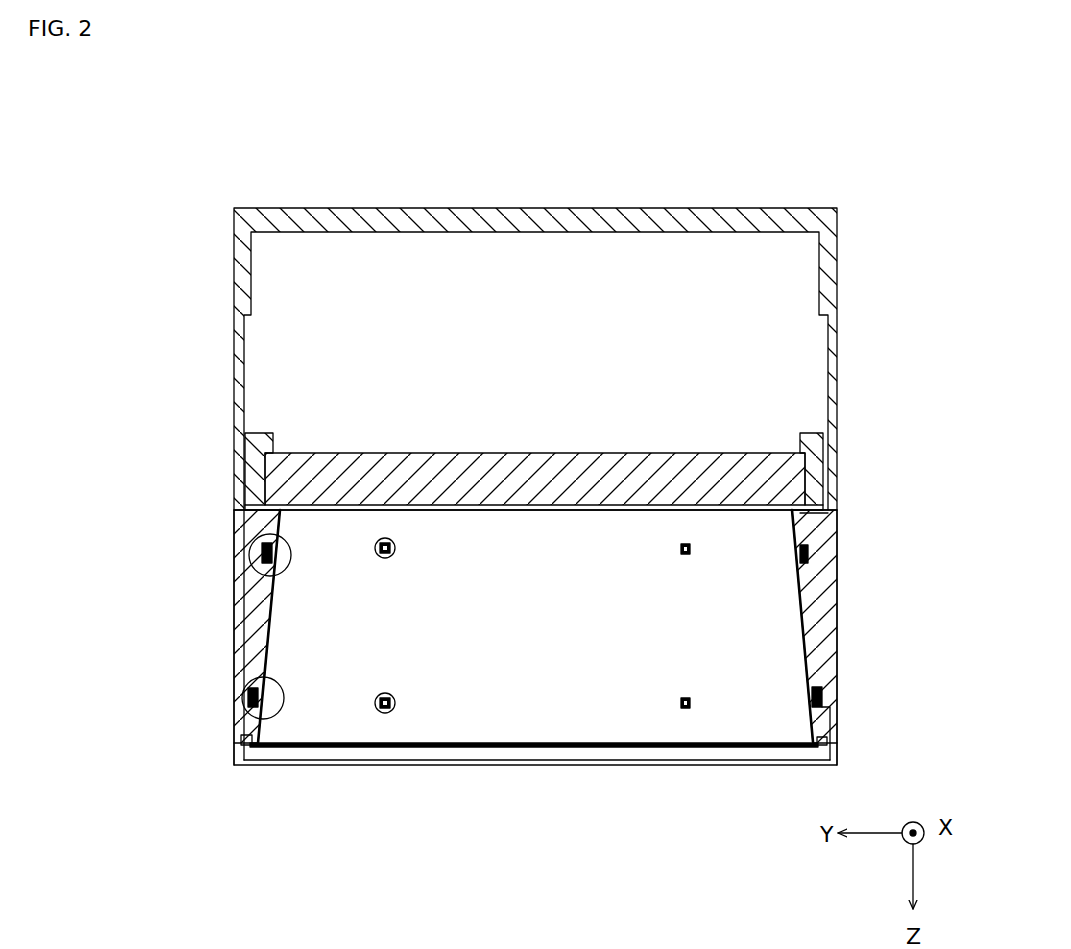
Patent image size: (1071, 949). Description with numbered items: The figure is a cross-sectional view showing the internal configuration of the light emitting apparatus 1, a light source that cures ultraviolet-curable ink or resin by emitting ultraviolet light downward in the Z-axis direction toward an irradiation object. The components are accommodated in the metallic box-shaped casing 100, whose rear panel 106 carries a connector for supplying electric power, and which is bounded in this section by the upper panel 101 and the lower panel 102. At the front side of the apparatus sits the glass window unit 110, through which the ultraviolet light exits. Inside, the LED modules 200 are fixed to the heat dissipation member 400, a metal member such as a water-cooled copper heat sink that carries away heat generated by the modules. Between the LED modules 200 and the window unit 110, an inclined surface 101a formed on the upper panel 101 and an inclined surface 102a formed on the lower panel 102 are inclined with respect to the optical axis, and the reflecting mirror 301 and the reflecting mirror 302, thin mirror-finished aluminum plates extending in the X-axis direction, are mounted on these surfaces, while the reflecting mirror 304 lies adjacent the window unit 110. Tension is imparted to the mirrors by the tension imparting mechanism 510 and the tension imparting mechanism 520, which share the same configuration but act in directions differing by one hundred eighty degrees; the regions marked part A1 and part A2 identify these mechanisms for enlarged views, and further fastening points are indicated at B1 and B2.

The light emitting apparatus 1 is at (539, 451).
The casing 100 is at (538, 484).
The rear panel 106 is at (538, 523).
The upper panel 101 is at (207, 553).
The lower panel 102 is at (866, 553).
The inclined surface 101a is at (238, 620).
The inclined surface 102a is at (805, 620).
The window unit 110 is at (712, 757).
The LED module 200 is at (328, 518).
The reflecting mirror 301 is at (272, 655).
The reflecting mirror 302 is at (797, 650).
The reflecting mirror 304 is at (418, 727).
The heat dissipation member 400 is at (773, 462).
The tension imparting mechanism 510 is at (262, 557).
The tension imparting mechanism 520 is at (255, 705).
The part A1 is at (255, 540).
The part A2 is at (250, 695).
The region B1 is at (380, 558).
The region B2 is at (380, 695).